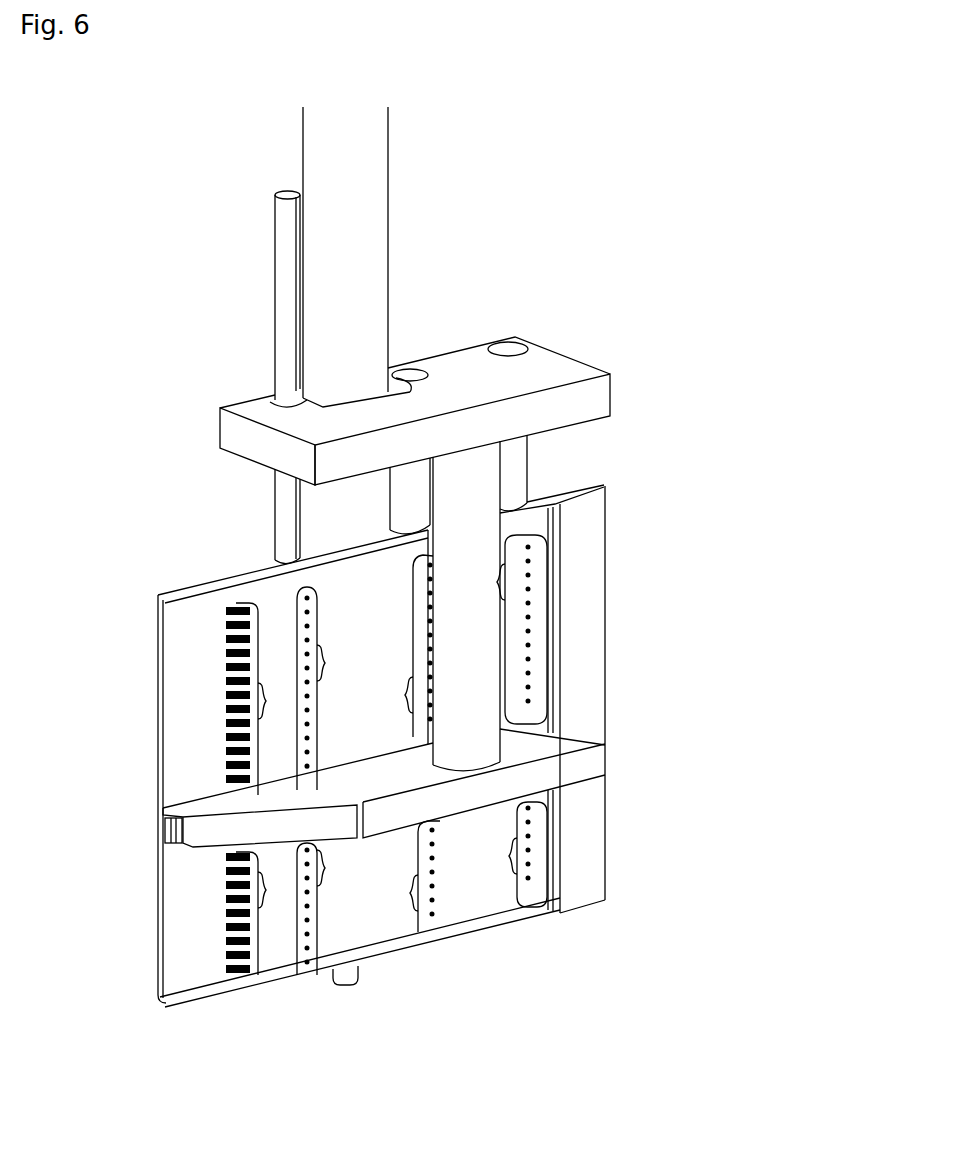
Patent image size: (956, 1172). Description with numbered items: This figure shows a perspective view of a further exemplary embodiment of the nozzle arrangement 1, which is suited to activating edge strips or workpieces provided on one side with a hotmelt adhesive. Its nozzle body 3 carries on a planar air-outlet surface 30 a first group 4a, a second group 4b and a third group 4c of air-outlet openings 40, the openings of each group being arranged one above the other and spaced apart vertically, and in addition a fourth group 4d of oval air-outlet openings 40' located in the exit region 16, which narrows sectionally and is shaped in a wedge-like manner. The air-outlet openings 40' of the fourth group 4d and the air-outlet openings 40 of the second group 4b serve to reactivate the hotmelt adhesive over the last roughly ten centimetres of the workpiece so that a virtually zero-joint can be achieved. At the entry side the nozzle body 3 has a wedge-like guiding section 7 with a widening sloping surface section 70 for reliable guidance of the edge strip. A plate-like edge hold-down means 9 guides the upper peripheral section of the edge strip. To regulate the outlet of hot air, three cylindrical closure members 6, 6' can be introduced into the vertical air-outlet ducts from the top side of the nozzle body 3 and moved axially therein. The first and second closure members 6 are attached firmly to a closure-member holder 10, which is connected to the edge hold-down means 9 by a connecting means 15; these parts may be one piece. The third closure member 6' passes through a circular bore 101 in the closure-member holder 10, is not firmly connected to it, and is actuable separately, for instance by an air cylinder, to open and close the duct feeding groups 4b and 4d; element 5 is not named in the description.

The nozzle arrangement 1 is at (112, 469).
The nozzle body 3 is at (381, 938).
The first group of air-outlet openings 4a is at (503, 721).
The second group of air-outlet openings 4b is at (330, 781).
The third group of air-outlet openings 4c is at (403, 743).
The fourth group of air-outlet openings 4d is at (270, 789).
The rod 5 is at (352, 192).
The closure member 6 is at (540, 391).
The third closure member 6' is at (250, 516).
The guiding section 7 is at (375, 744).
The edge hold-down means 9 is at (538, 743).
The closure-member holder 10 is at (592, 401).
The connecting means 15 is at (450, 710).
The exit region 16 is at (198, 648).
The air-outlet surface 30 is at (350, 632).
The air-outlet openings 40 is at (481, 800).
The air-outlet openings of the fourth group 40' is at (128, 908).
The sloping surface section 70 is at (566, 648).
The circular bore 101 is at (270, 403).